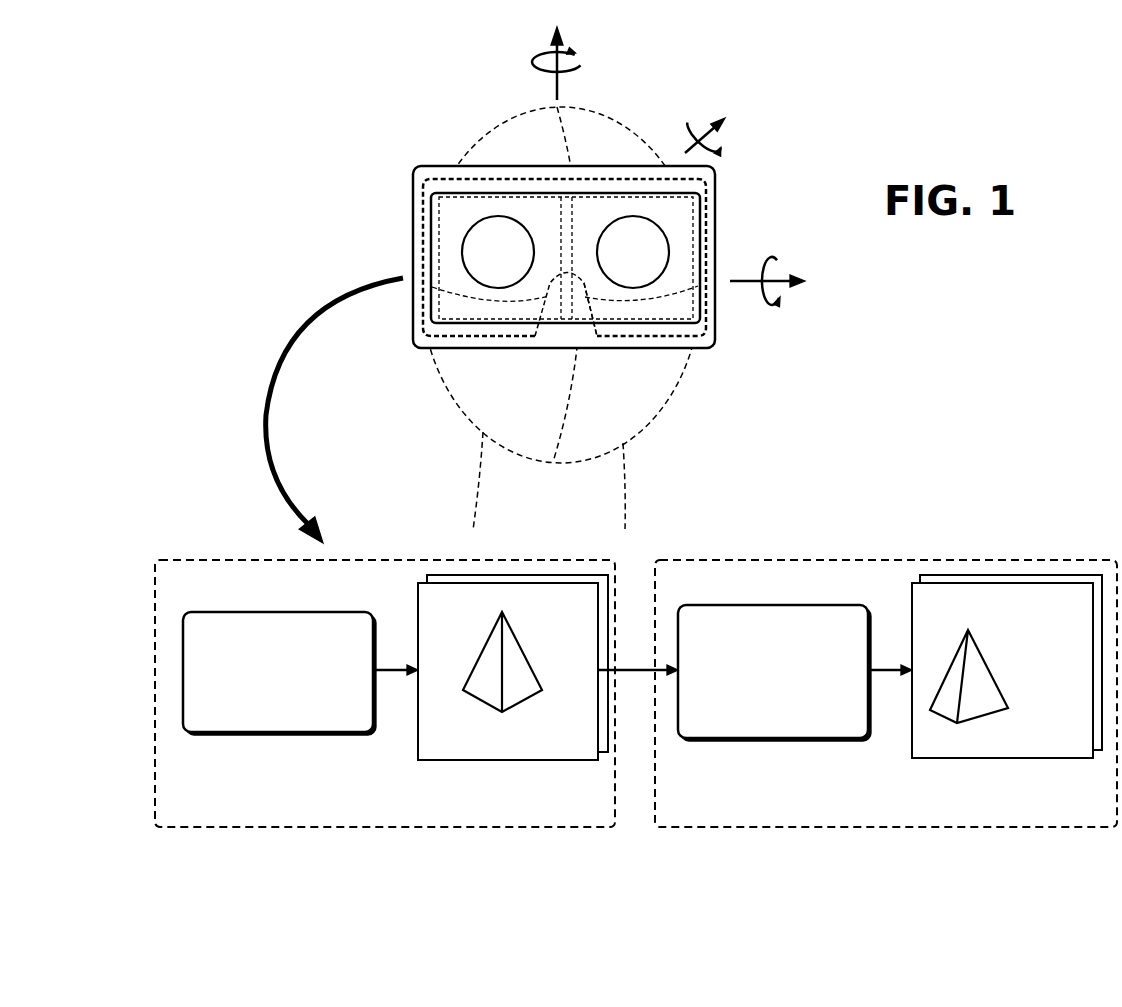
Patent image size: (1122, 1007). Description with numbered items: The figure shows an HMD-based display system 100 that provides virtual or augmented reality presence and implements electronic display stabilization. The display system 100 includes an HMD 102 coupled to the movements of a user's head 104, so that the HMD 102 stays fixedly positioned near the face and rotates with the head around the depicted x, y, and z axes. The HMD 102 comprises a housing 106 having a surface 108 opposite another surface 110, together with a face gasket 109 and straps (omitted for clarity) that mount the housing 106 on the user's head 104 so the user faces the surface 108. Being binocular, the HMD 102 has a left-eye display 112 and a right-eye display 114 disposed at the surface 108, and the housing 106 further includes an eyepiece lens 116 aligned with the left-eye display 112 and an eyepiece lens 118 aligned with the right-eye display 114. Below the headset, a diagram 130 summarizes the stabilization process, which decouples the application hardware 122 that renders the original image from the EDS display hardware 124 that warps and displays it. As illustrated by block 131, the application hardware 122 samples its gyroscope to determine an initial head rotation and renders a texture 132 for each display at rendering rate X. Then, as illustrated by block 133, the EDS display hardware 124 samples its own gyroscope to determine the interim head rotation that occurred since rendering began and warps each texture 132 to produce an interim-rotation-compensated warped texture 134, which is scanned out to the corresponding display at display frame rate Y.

The display system 100 is at (600, 269).
The HMD 102 is at (436, 158).
The user's head 104 is at (449, 422).
The housing 106 is at (717, 196).
The surface 108 is at (614, 348).
The face gasket 109 is at (517, 338).
The surface 110 is at (728, 319).
The left-eye display 112 is at (500, 246).
The right-eye display 114 is at (637, 246).
The eyepiece lens 116 is at (526, 229).
The eyepiece lens 118 is at (661, 229).
The application hardware 122 is at (385, 693).
The EDS display hardware 124 is at (886, 693).
The diagram 130 is at (213, 529).
The block 131 is at (283, 612).
The texture 132 is at (513, 667).
The block 133 is at (782, 605).
The warped texture 134 is at (1007, 666).